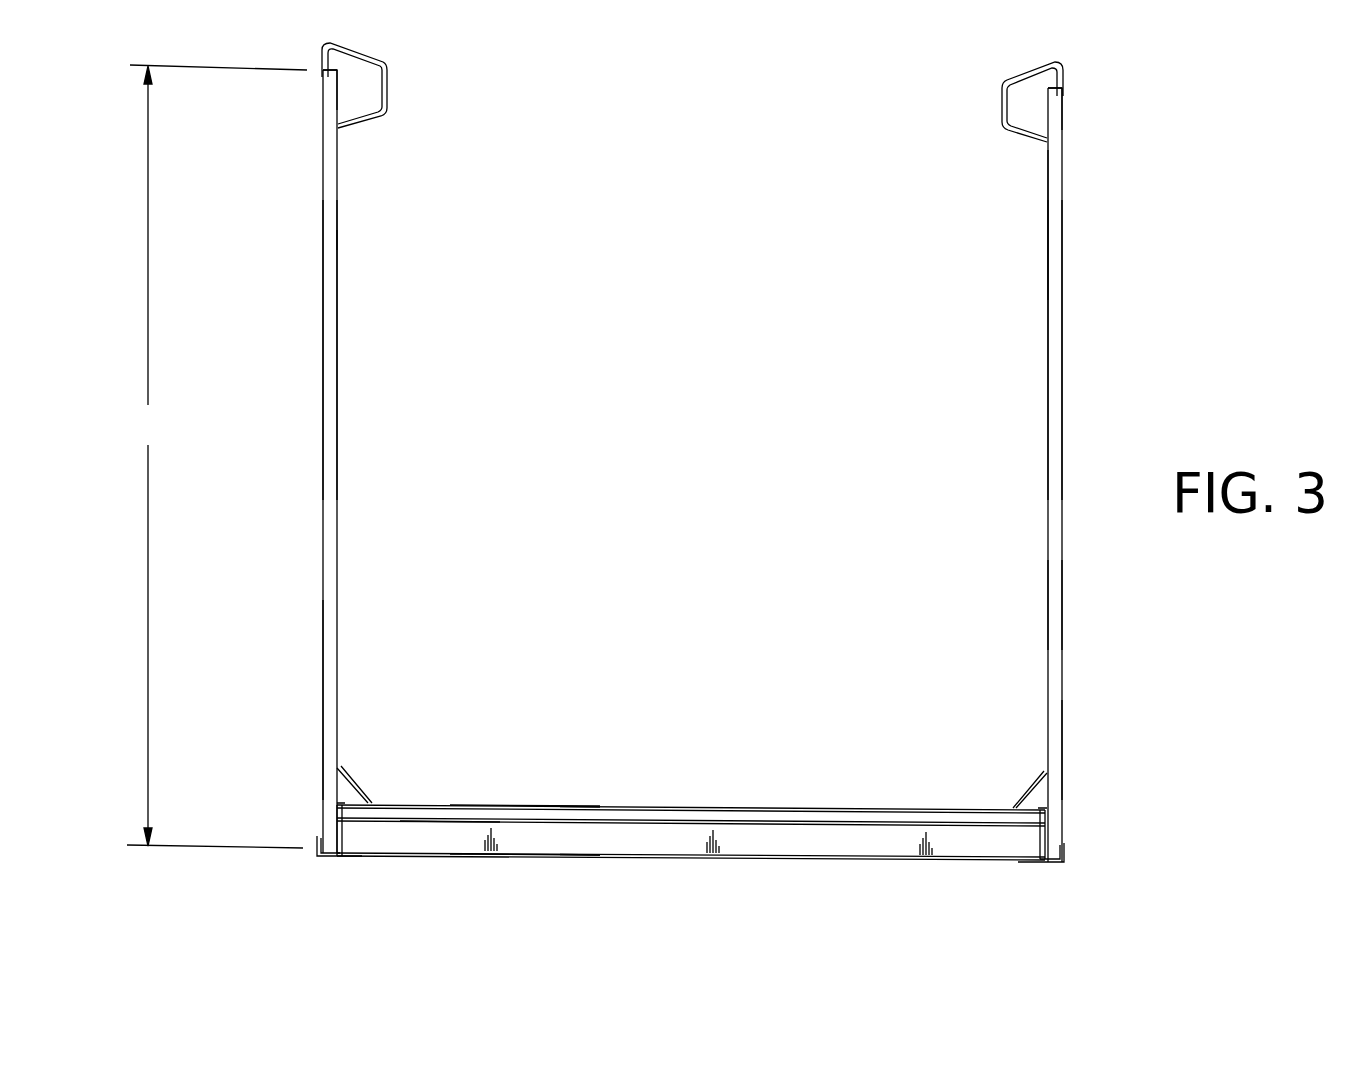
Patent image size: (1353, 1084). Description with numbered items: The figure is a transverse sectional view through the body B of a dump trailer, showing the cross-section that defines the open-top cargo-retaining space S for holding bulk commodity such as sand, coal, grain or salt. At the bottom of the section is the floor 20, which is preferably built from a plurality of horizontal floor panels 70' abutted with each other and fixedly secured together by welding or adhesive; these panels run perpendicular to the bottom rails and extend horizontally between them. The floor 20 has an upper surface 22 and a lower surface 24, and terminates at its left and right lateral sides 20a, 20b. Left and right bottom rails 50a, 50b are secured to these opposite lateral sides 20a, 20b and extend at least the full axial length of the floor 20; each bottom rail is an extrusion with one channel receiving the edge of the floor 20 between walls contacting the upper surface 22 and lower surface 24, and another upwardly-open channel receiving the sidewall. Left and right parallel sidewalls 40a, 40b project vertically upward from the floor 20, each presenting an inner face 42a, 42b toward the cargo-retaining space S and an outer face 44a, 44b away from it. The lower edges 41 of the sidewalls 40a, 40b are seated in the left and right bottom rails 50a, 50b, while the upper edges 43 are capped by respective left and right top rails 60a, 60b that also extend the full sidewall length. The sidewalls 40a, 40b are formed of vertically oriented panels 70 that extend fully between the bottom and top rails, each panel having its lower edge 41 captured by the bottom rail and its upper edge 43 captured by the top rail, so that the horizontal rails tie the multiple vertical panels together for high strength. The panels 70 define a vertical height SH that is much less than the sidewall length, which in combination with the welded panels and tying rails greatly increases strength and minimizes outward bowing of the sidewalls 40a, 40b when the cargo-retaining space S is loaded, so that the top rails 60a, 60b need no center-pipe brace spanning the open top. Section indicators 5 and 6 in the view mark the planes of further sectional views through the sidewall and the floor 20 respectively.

The floor 20 is at (778, 802).
The left lateral side of floor 20a is at (368, 834).
The right lateral side of floor 20b is at (1015, 838).
The upper surface of floor 22 is at (492, 800).
The lower surface of floor 24 is at (546, 868).
The left sidewall 40a is at (352, 442).
The right sidewall 40b is at (1036, 450).
The lower edge of sidewall 41 is at (330, 835).
The inner face of left sidewall 42a is at (352, 307).
The inner face of right sidewall 42b is at (1036, 318).
The upper edge of sidewall 43 is at (330, 90).
The outer face of left sidewall 44a is at (310, 378).
The outer face of right sidewall 44b is at (1075, 395).
The left bottom rail 50a is at (334, 866).
The right bottom rail 50b is at (1046, 870).
The left top rail 60a is at (400, 93).
The right top rail 60b is at (992, 102).
The sidewall panel 70 is at (693, 690).
The floor panel 70' is at (437, 868).
The sidewall panel height SH is at (217, 456).
The trailer body B is at (1108, 210).
The cargo-retaining space S is at (898, 240).
The section line 5- 5 is at (1137, 600).
The section line 6- 6 is at (600, 895).